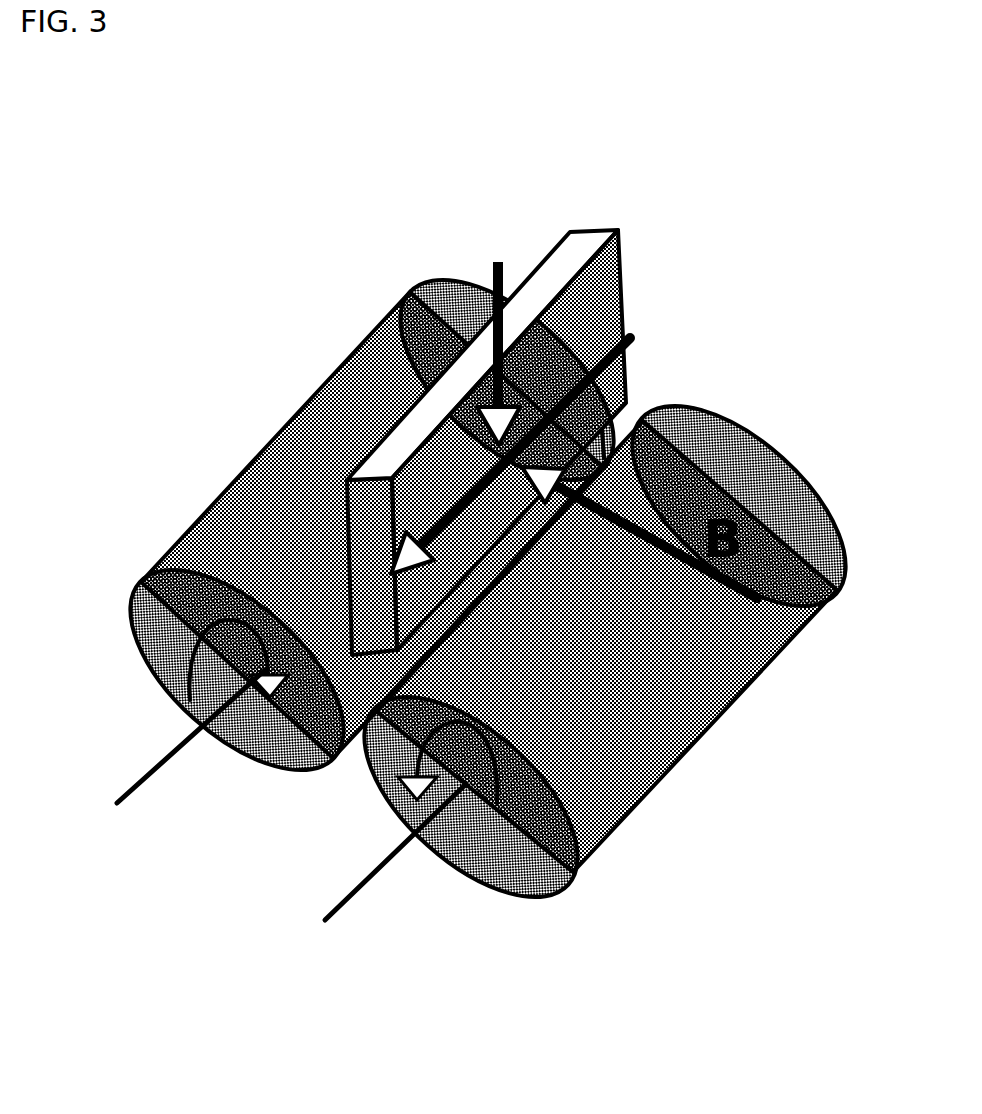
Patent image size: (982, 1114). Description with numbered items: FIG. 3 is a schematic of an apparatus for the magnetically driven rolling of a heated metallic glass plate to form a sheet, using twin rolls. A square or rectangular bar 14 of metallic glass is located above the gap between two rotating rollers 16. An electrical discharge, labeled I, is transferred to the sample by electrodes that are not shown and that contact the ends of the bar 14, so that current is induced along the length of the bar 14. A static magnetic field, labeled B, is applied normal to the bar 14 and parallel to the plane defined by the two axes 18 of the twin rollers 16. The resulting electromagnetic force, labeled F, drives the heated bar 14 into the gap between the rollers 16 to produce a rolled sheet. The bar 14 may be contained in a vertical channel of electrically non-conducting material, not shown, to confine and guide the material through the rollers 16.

The bar 14 is at (595, 292).
The rotating rollers 16 is at (263, 490).
The axes 18 is at (382, 855).